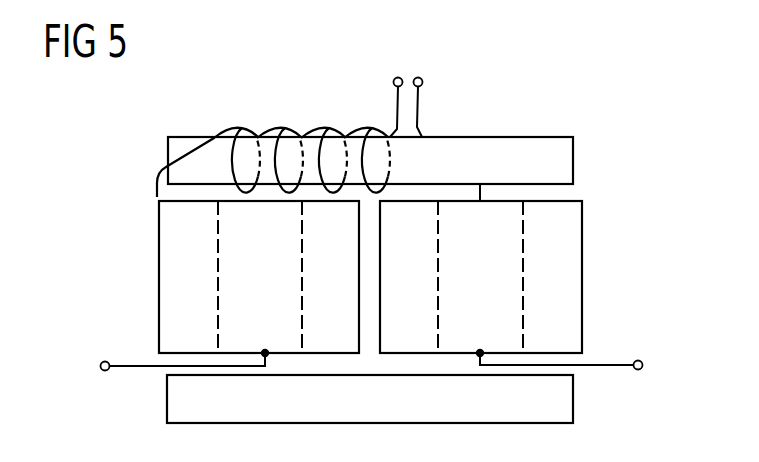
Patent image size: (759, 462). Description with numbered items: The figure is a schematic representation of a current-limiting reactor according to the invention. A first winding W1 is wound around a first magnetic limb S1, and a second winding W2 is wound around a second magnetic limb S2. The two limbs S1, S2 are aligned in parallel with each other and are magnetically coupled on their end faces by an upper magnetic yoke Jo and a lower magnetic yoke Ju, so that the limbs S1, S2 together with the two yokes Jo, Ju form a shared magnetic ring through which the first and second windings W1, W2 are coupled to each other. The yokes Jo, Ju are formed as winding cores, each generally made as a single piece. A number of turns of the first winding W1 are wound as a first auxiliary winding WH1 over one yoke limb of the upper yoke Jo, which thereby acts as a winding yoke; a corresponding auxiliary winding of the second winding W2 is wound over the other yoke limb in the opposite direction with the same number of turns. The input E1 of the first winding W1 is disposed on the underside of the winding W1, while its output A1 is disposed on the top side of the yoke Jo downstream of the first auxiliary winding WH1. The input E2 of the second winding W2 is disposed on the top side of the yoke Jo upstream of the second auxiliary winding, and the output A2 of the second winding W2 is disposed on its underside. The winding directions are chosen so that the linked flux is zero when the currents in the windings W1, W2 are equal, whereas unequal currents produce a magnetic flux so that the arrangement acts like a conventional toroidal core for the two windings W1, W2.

The upper magnetic yoke Jo is at (573, 161).
The first auxiliary winding WH1 is at (282, 127).
The output of the first winding A1 is at (393, 82).
The input of the second winding E2 is at (423, 81).
The first winding W1 is at (158, 277).
The first magnetic limb S1 is at (302, 280).
The second winding W2 is at (583, 277).
The second magnetic limb S2 is at (438, 280).
The input of the first winding E1 is at (100, 366).
The output of the second winding A2 is at (643, 366).
The lower magnetic yoke Ju is at (573, 398).